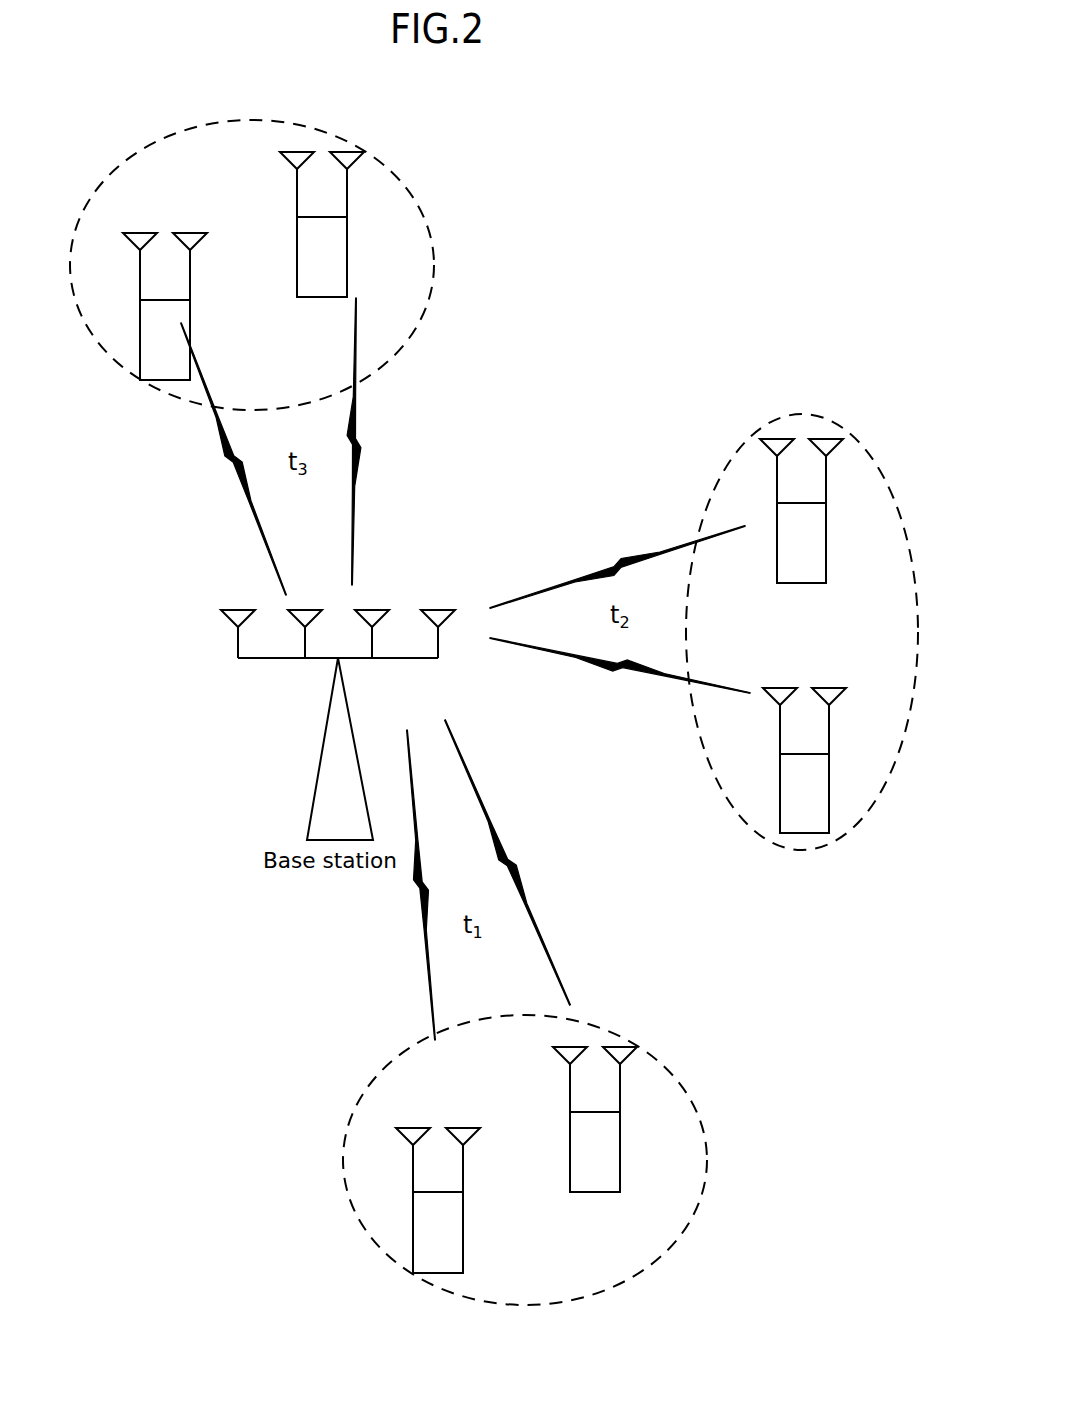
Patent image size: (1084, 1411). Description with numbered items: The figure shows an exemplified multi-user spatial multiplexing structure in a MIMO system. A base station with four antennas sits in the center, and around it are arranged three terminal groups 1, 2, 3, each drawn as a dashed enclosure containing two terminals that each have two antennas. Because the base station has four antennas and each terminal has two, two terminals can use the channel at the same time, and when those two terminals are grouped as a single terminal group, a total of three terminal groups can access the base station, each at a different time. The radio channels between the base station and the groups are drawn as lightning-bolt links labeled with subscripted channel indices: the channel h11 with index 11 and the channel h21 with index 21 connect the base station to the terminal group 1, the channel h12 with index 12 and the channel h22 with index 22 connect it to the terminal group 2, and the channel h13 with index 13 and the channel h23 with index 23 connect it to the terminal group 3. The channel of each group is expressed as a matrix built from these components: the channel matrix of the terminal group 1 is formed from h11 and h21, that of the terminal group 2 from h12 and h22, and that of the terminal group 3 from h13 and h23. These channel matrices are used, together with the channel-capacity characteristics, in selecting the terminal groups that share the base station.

The terminal group 1 is at (590, 1160).
The terminal group 2 is at (802, 646).
The terminal group 3 is at (327, 265).
The channel h11 between base station and terminal group 1 11 is at (403, 885).
The channel h21 between base station and terminal group 1 21 is at (509, 862).
The channel h12 between base station and terminal group 2 12 is at (620, 675).
The channel h22 between base station and terminal group 2 22 is at (617, 564).
The channel h13 between base station and terminal group 3 13 is at (377, 441).
The channel h23 between base station and terminal group 3 23 is at (234, 459).
The channel h11 is at (403, 885).
The channel h21 is at (509, 862).
The channel h12 is at (620, 675).
The channel h22 is at (617, 564).
The channel h13 is at (377, 441).
The channel h23 is at (234, 459).